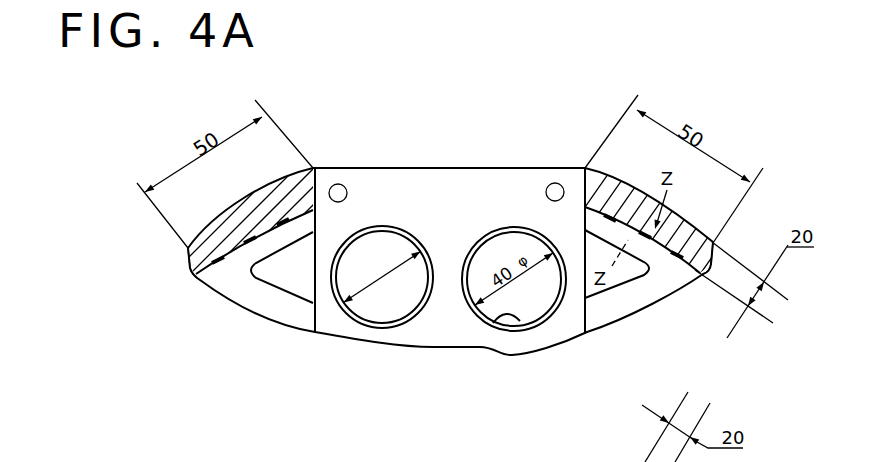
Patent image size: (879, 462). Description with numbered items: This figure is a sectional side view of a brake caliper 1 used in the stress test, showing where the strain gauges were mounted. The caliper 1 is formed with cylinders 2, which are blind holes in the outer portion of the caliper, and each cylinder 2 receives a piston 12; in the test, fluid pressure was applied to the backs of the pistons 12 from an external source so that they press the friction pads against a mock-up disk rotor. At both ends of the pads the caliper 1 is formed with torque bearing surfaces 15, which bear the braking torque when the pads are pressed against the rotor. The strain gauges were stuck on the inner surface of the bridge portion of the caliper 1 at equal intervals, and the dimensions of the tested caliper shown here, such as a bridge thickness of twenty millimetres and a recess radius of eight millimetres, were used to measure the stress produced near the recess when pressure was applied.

The caliper 1 is at (290, 313).
The cylinder 2 is at (520, 322).
The piston 12 is at (390, 323).
The torque bearing surface 15 is at (580, 243).